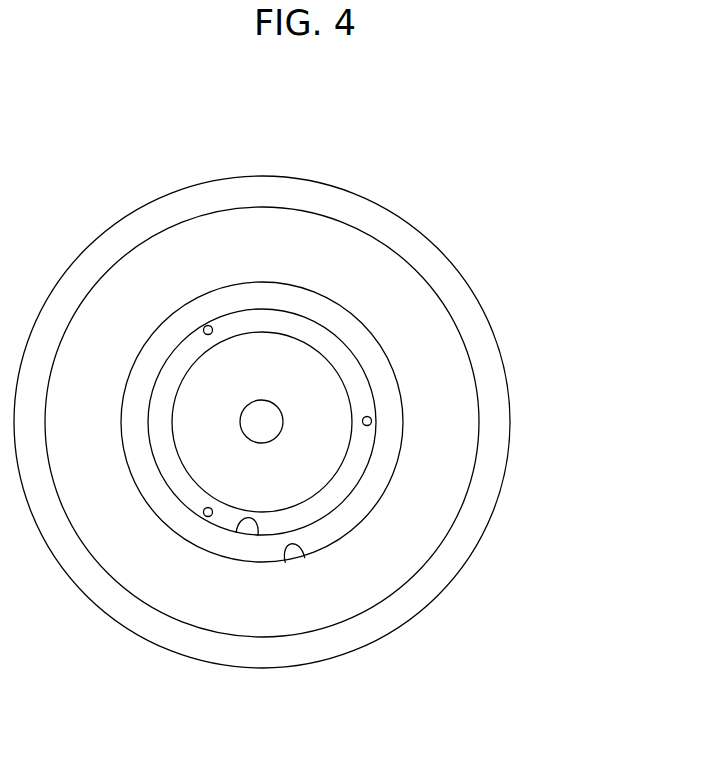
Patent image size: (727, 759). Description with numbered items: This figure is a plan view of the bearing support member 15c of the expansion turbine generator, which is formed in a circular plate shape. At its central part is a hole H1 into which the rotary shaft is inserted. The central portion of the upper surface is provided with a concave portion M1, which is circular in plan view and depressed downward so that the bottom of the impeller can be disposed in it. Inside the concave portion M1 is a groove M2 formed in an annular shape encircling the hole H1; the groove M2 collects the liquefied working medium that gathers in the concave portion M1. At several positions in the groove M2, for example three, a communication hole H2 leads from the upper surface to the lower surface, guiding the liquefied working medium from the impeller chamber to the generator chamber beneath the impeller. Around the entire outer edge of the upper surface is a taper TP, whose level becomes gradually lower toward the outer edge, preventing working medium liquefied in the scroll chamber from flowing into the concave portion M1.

The bearing support member 15c is at (407, 220).
The taper TP is at (475, 508).
The hole H1 is at (252, 404).
The communication hole H2 is at (204, 327).
The concave portion M1 is at (285, 560).
The groove M2 is at (258, 534).